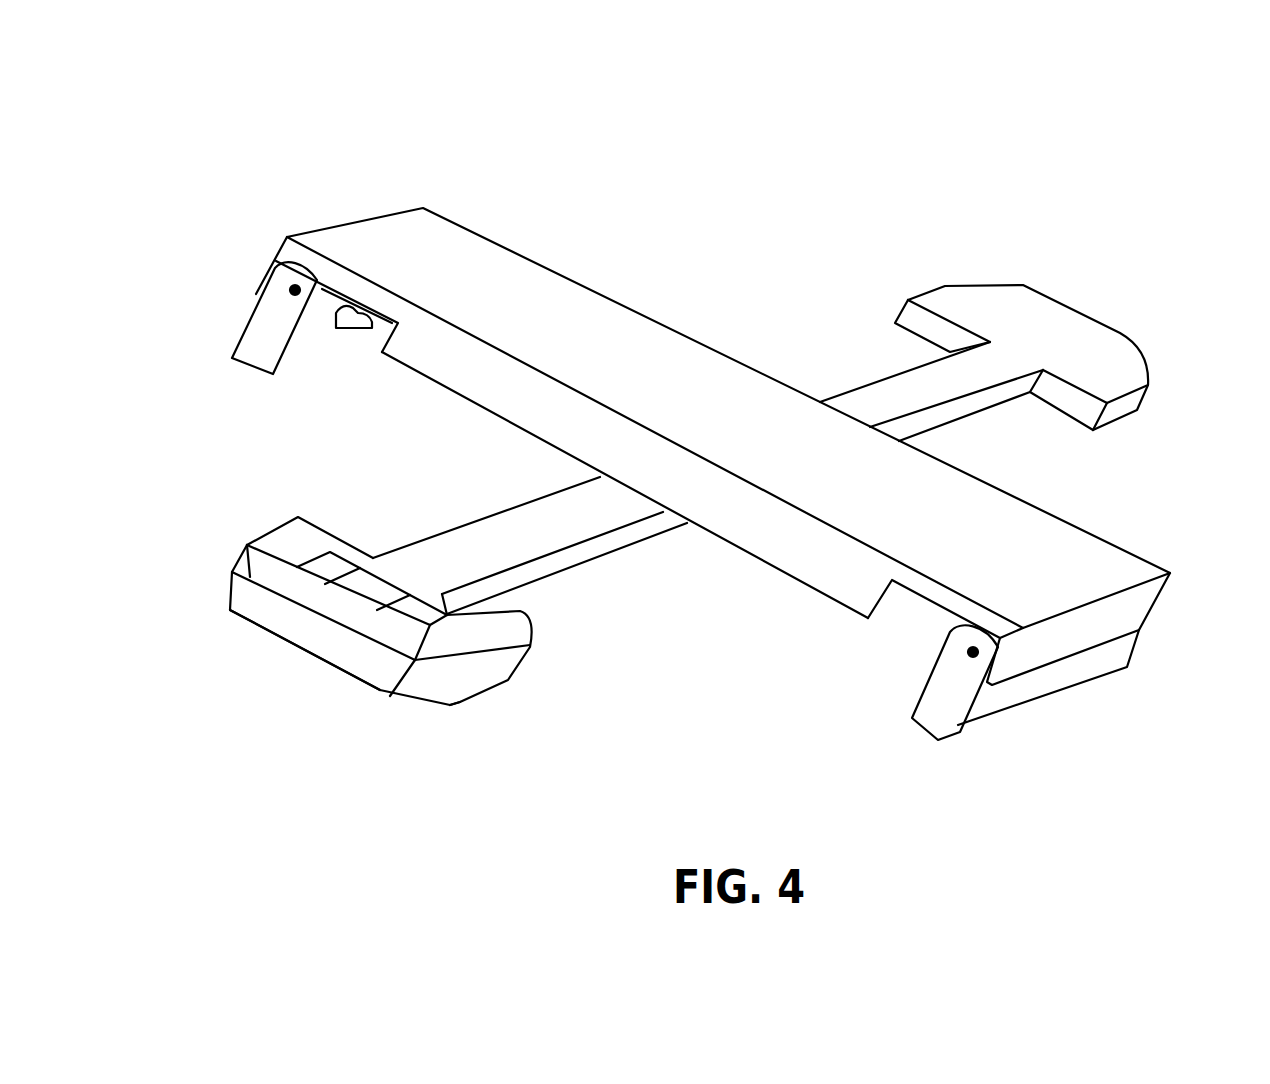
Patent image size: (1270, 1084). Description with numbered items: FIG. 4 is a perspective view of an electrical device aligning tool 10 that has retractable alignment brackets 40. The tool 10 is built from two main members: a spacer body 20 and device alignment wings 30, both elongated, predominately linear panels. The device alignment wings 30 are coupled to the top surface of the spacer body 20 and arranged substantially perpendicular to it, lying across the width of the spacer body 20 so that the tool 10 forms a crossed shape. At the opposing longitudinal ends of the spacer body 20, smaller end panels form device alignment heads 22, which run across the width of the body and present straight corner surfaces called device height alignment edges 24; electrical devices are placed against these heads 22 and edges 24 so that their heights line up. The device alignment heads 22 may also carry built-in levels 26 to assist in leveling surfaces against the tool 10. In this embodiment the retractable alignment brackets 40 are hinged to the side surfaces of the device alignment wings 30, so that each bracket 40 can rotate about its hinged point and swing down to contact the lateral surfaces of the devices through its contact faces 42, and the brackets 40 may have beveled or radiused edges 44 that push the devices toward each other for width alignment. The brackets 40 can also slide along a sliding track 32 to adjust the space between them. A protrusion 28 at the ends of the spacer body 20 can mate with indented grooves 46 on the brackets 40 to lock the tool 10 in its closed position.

The electrical device aligning tool 10 is at (752, 170).
The spacer body 20 is at (469, 518).
The device alignment heads 22 is at (274, 526).
The device height alignment edges 24 is at (512, 610).
The built-in levels 26 is at (443, 636).
The protrusion 28 is at (332, 668).
The device alignment wings 30 is at (576, 280).
The sliding track 32 is at (768, 566).
The retractable alignment brackets 40 is at (240, 374).
The contact faces 42 is at (303, 318).
The beveled or radiused edges 44 is at (266, 372).
The indented grooves 46 is at (340, 342).